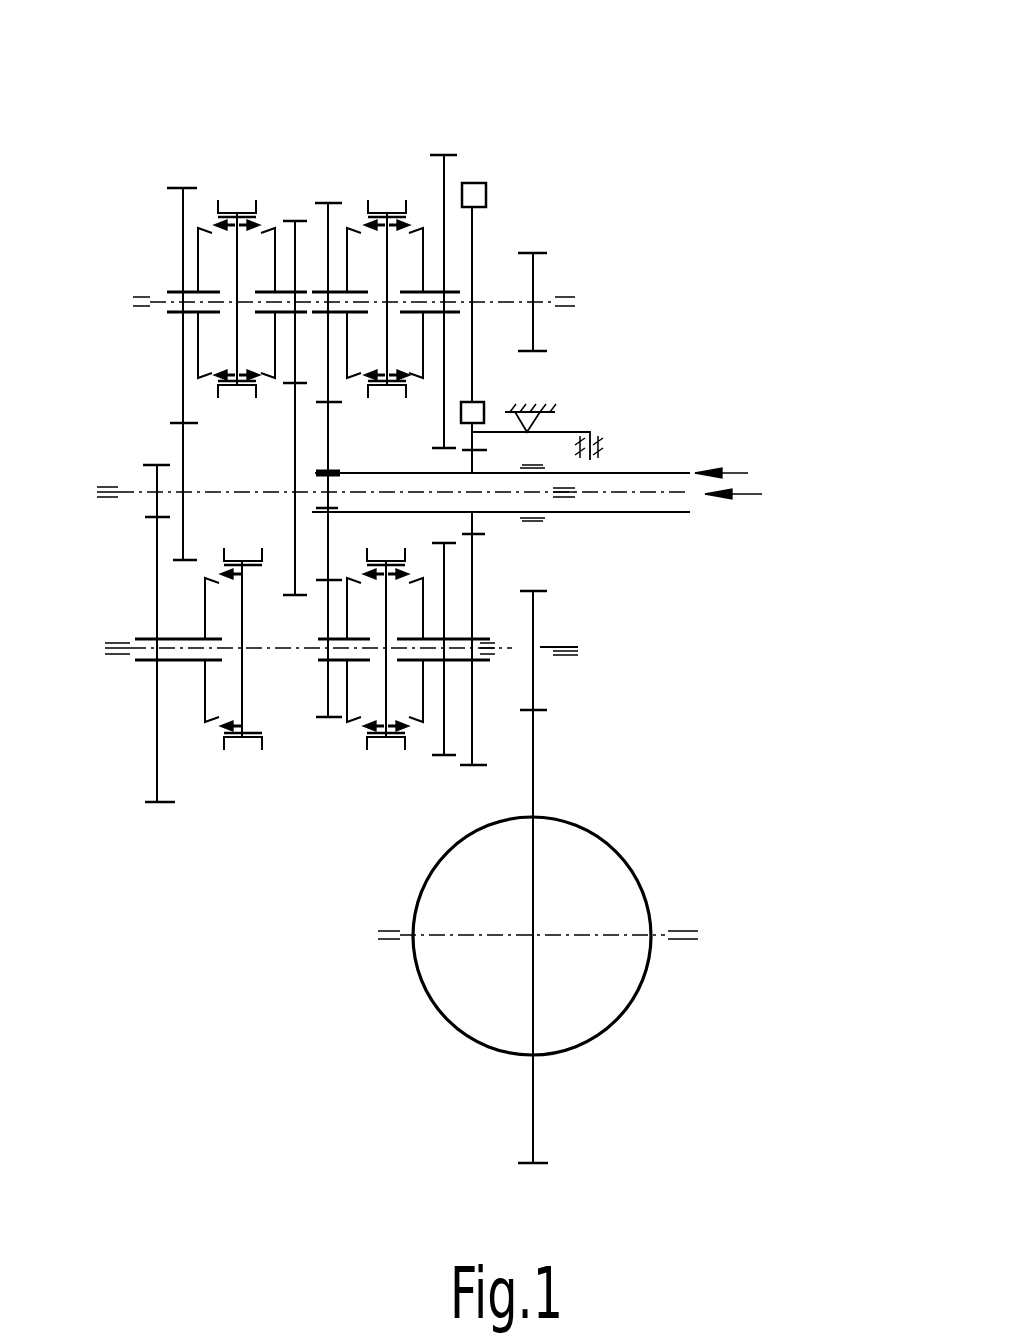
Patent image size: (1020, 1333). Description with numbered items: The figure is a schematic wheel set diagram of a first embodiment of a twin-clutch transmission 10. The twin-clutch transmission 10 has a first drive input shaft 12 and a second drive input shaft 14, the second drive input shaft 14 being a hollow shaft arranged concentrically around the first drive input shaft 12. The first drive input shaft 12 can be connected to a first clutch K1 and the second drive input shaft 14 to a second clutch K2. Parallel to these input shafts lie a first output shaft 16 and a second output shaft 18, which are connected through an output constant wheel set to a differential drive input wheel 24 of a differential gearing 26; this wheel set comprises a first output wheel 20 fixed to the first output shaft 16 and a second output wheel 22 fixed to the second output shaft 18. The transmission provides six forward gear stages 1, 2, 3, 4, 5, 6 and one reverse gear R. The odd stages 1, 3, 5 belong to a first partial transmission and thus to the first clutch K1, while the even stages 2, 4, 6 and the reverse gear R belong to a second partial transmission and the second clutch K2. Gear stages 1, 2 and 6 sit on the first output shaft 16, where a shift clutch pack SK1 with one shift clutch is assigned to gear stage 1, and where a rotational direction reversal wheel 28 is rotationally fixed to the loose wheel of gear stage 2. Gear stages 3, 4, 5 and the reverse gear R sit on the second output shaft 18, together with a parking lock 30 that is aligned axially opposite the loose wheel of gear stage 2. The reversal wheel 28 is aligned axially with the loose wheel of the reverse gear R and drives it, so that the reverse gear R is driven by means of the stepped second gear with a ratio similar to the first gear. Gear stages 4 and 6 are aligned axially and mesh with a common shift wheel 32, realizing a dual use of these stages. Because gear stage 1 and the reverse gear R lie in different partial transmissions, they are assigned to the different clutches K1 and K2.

The forward gear stage 1 is at (178, 656).
The forward gear stage 2 is at (443, 675).
The forward gear stage 3 is at (193, 352).
The forward gear stage 4 is at (340, 359).
The forward gear stage 5 is at (281, 388).
The forward gear stage 6 is at (343, 660).
The twin-clutch transmission 10 is at (738, 268).
The first drive input shaft 12 is at (640, 495).
The second drive input shaft 14 is at (655, 470).
The first output shaft 16 is at (544, 650).
The second output shaft 18 is at (550, 292).
The first output wheel 20 is at (540, 588).
The second output wheel 22 is at (546, 250).
The differential drive input wheel 24 is at (535, 1108).
The differential gearing 26 is at (633, 867).
The rotational direction reversal wheel 28 is at (445, 722).
The parking lock 30 is at (486, 192).
The common shift wheel 32 is at (340, 431).
The reverse gear stage R is at (430, 290).
The parking gear shaft P is at (532, 303).
The first clutch K1 is at (755, 500).
The second clutch K2 is at (751, 456).
The shift clutch pack SK1 is at (242, 750).